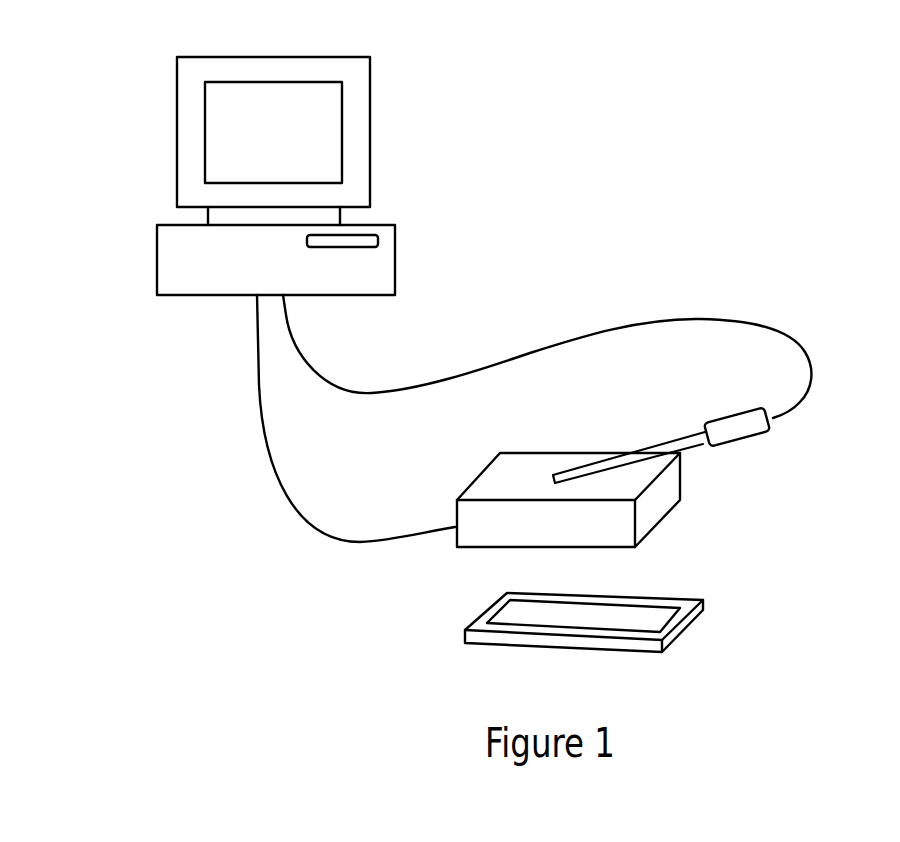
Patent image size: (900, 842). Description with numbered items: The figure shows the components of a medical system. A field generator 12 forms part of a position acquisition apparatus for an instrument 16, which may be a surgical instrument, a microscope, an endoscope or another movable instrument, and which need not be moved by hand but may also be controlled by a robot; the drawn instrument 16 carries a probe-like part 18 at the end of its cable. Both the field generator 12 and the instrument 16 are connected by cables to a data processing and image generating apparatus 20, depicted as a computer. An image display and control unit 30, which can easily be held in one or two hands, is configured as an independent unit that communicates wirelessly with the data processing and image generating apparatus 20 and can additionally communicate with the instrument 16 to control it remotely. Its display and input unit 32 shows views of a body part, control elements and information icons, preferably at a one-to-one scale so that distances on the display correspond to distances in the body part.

The field generator 12 is at (657, 510).
The instrument 16 is at (693, 447).
The hand-held probe 18 is at (740, 423).
The data processing and image generating apparatus 20 is at (177, 277).
The image display and control unit 30 is at (551, 630).
The display and input unit 32 is at (628, 618).